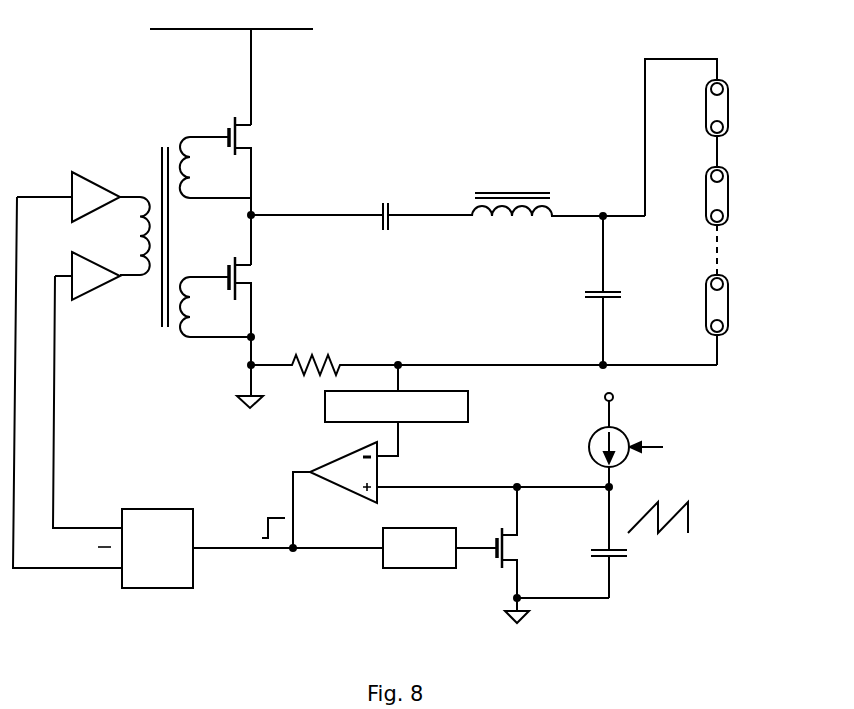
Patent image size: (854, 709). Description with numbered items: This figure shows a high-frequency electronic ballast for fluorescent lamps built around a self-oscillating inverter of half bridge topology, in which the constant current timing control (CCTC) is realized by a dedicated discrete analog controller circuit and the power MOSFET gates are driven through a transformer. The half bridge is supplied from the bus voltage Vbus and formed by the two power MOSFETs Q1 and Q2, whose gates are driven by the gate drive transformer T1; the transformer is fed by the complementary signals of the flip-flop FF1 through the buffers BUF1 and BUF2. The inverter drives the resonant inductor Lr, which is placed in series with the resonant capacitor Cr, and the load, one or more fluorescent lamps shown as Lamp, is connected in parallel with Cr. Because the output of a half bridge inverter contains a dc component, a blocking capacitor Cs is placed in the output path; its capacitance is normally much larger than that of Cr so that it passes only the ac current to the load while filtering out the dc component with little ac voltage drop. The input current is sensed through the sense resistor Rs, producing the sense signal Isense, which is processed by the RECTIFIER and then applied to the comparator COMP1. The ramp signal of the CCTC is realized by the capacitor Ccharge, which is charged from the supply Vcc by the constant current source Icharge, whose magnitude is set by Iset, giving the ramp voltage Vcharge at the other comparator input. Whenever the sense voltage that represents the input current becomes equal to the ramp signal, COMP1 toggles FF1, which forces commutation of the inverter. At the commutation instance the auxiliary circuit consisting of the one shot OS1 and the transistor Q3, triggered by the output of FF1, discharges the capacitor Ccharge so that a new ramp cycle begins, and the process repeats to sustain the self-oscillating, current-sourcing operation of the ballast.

The bus voltage supply Vbus is at (231, 14).
The upper switching transistor Q1 is at (259, 153).
The lower switching transistor Q2 is at (258, 283).
The transistor Q3 is at (526, 542).
The gate drive transformer T1 is at (185, 248).
The first buffer BUF1 is at (71, 184).
The second buffer BUF2 is at (89, 295).
The flip-flop FF1 is at (191, 547).
The sense resistor Rs is at (324, 352).
The sense current node Isense is at (415, 364).
The rectifier RECTIFIER is at (396, 407).
The comparator COMP1 is at (307, 472).
The one shot OS1 is at (419, 548).
The supply voltage Vcc is at (627, 405).
The constant current Icharge is at (573, 457).
The set current input Iset is at (664, 440).
The charge voltage node Vcharge is at (648, 513).
The capacitor Ccharge is at (644, 574).
The blocking capacitor Cs is at (361, 203).
The inductor Lr is at (558, 191).
The capacitor Cr is at (591, 292).
The lamp Lamp is at (751, 222).